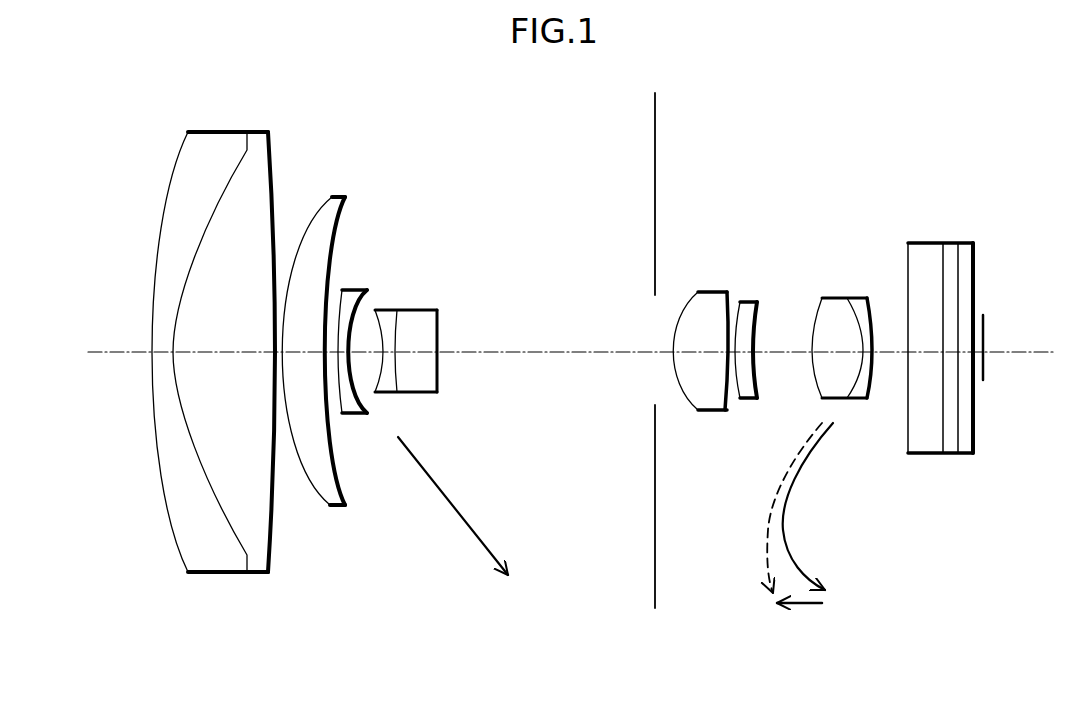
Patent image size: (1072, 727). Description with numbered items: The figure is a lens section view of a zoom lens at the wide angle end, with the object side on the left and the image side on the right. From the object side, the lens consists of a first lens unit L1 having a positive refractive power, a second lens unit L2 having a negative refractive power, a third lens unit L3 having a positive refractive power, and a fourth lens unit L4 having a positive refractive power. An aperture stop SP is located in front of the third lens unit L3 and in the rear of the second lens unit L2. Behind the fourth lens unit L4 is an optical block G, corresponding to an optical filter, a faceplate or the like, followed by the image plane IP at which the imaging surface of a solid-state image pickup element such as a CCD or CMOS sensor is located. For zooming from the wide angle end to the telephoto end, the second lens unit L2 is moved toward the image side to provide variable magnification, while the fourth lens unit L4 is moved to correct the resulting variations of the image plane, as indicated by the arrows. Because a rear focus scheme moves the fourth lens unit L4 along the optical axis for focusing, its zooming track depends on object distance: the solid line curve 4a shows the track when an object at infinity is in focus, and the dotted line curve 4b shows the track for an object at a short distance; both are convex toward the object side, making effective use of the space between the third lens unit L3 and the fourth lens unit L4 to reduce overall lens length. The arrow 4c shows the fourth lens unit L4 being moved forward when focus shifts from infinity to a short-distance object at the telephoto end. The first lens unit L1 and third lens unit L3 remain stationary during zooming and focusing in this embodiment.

The first lens unit L1 is at (172, 125).
The second lens unit L2 is at (340, 280).
The third lens unit L3 is at (677, 280).
The fourth lens unit L4 is at (812, 280).
The aperture stop SP is at (655, 120).
The optical block G is at (900, 230).
The image plane IP is at (983, 333).
The solid line curve 4a is at (790, 497).
The dotted line curve 4b is at (773, 502).
The arrow 4c is at (807, 607).